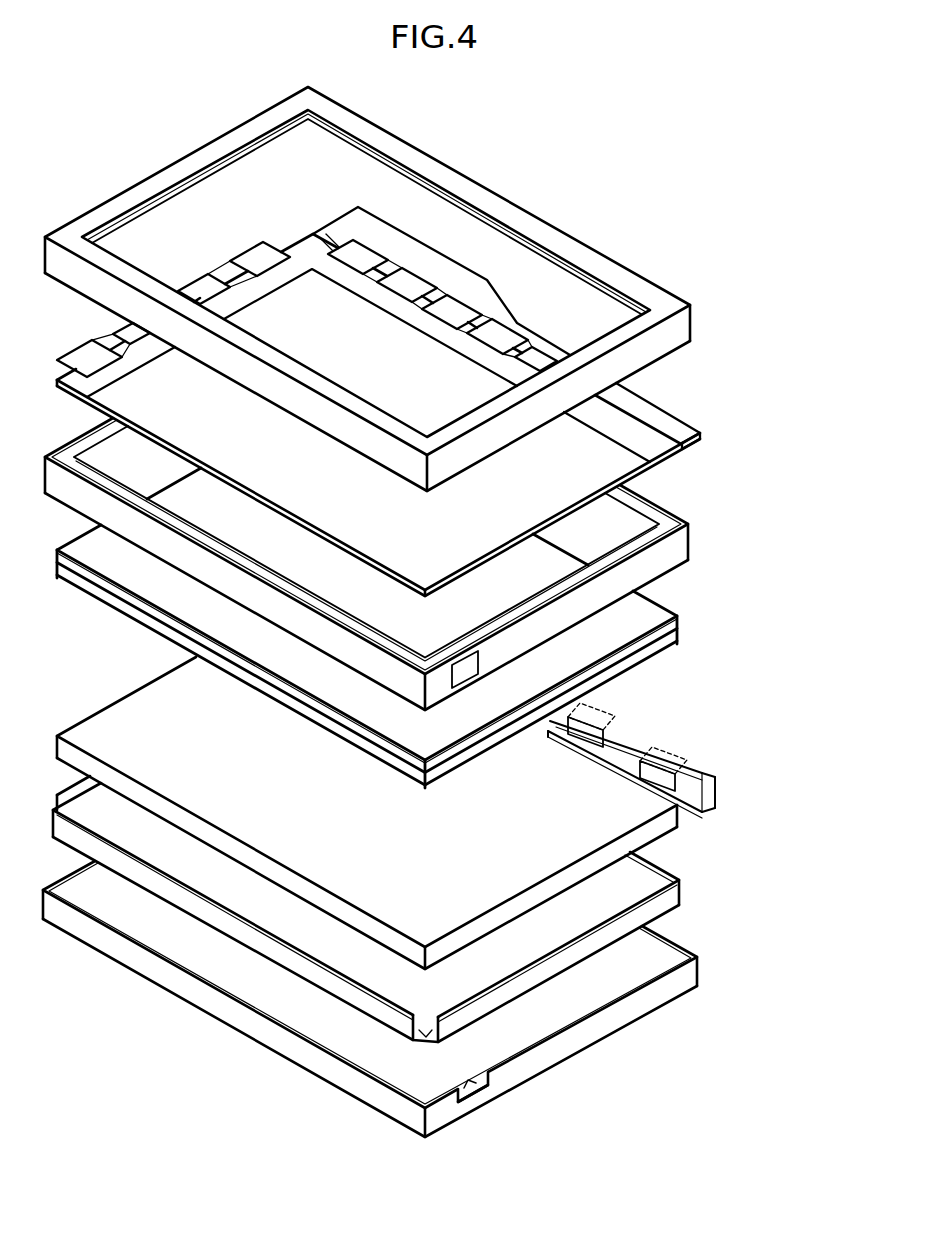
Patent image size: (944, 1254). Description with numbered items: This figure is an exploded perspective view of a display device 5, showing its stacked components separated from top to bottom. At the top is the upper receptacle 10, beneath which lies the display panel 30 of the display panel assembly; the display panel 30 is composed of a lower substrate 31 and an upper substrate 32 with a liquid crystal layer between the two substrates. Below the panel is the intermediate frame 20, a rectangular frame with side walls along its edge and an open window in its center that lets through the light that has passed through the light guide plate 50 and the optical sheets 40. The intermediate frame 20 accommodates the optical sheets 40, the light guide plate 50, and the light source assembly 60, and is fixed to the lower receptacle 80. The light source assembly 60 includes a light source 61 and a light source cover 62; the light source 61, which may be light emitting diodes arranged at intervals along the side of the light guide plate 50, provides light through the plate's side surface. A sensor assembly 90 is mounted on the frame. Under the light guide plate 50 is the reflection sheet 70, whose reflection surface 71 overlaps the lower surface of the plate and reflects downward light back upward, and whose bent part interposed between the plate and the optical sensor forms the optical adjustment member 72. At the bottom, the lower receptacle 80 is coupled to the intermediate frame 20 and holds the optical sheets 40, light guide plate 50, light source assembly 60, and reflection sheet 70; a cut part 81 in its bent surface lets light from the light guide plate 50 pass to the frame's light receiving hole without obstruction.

The display device 5 is at (184, 1071).
The upper receptacle 10 is at (678, 328).
The intermediate frame 20 is at (690, 548).
The display panel 30 is at (433, 401).
The lower substrate 31 is at (698, 428).
The upper substrate 32 is at (625, 456).
The optical sheets 40 is at (682, 608).
The light guide plate 50 is at (653, 823).
The light source assembly 60 is at (686, 760).
The light source 61 is at (665, 748).
The light source cover 62 is at (707, 790).
The reflection sheet 70 is at (432, 909).
The reflection surface 71 is at (637, 883).
The optical adjustment member 72 is at (647, 903).
The lower receptacle 80 is at (404, 999).
The cut part 81 is at (474, 1083).
The sensor assembly 90 is at (468, 667).